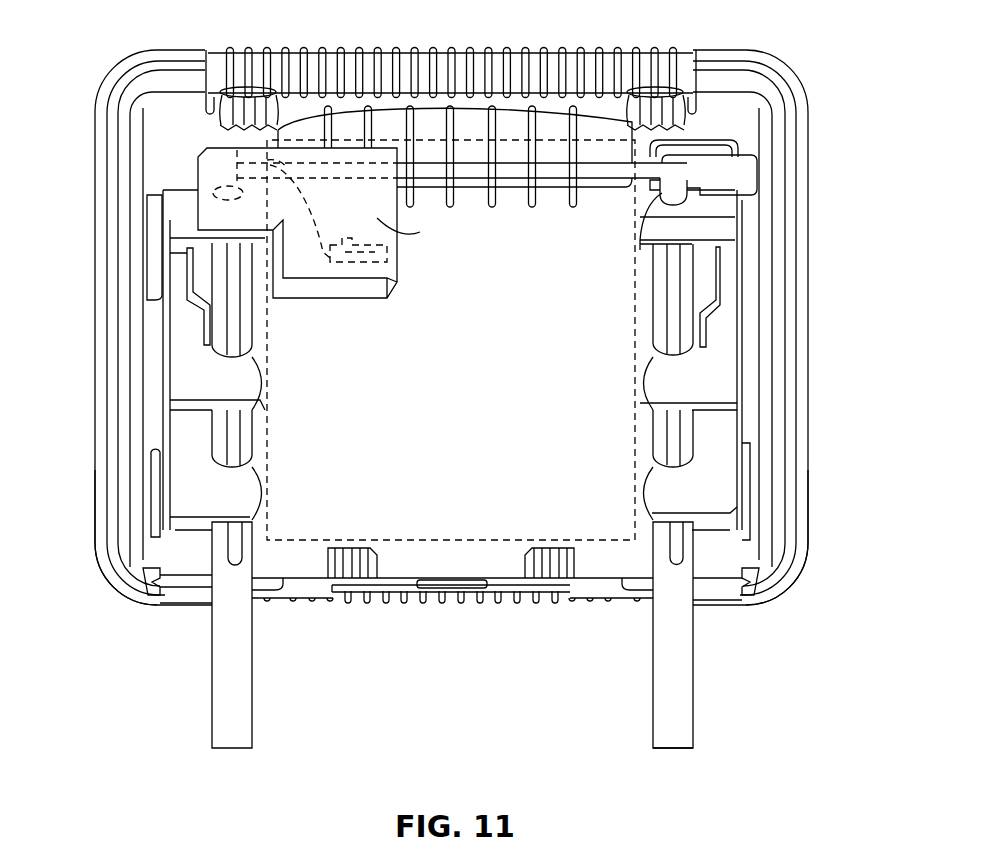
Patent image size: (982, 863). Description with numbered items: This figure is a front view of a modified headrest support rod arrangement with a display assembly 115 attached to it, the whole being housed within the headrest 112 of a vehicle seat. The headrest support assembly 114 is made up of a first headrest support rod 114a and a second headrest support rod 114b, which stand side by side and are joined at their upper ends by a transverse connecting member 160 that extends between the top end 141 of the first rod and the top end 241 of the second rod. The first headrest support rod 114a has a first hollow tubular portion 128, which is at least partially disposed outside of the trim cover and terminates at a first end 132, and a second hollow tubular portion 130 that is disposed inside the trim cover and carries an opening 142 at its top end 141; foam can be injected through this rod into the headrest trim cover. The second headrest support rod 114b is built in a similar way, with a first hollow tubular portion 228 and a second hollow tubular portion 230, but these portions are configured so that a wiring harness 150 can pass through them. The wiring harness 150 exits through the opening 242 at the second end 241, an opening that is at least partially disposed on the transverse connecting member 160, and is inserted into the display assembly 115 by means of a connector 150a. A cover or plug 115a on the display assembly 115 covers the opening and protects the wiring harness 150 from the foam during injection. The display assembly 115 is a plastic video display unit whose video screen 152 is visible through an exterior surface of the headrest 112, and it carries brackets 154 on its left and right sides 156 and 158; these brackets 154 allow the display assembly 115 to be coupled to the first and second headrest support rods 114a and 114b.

The headrest 112 is at (808, 392).
The headrest support assembly 114 is at (652, 430).
The first headrest support rod 114a is at (655, 265).
The second headrest support rod 114b is at (252, 433).
The display assembly 115 is at (556, 49).
The cover or plug 115a is at (415, 231).
The first hollow tubular portion 128 is at (693, 685).
The second hollow tubular portion 130 is at (650, 303).
The first end 132 is at (693, 735).
The top end 141 is at (663, 155).
The opening 142 is at (683, 167).
The wiring harness 150 is at (320, 203).
The connector 150a is at (387, 263).
The video screen 152 is at (417, 497).
The brackets 154 is at (178, 207).
The side 156 is at (808, 507).
The side 158 is at (95, 508).
The transverse connecting member 160 is at (513, 178).
The first hollow tubular portion 228 is at (252, 716).
The second hollow tubular portion 230 is at (250, 313).
The second end 241 is at (237, 150).
The opening 242 is at (283, 163).